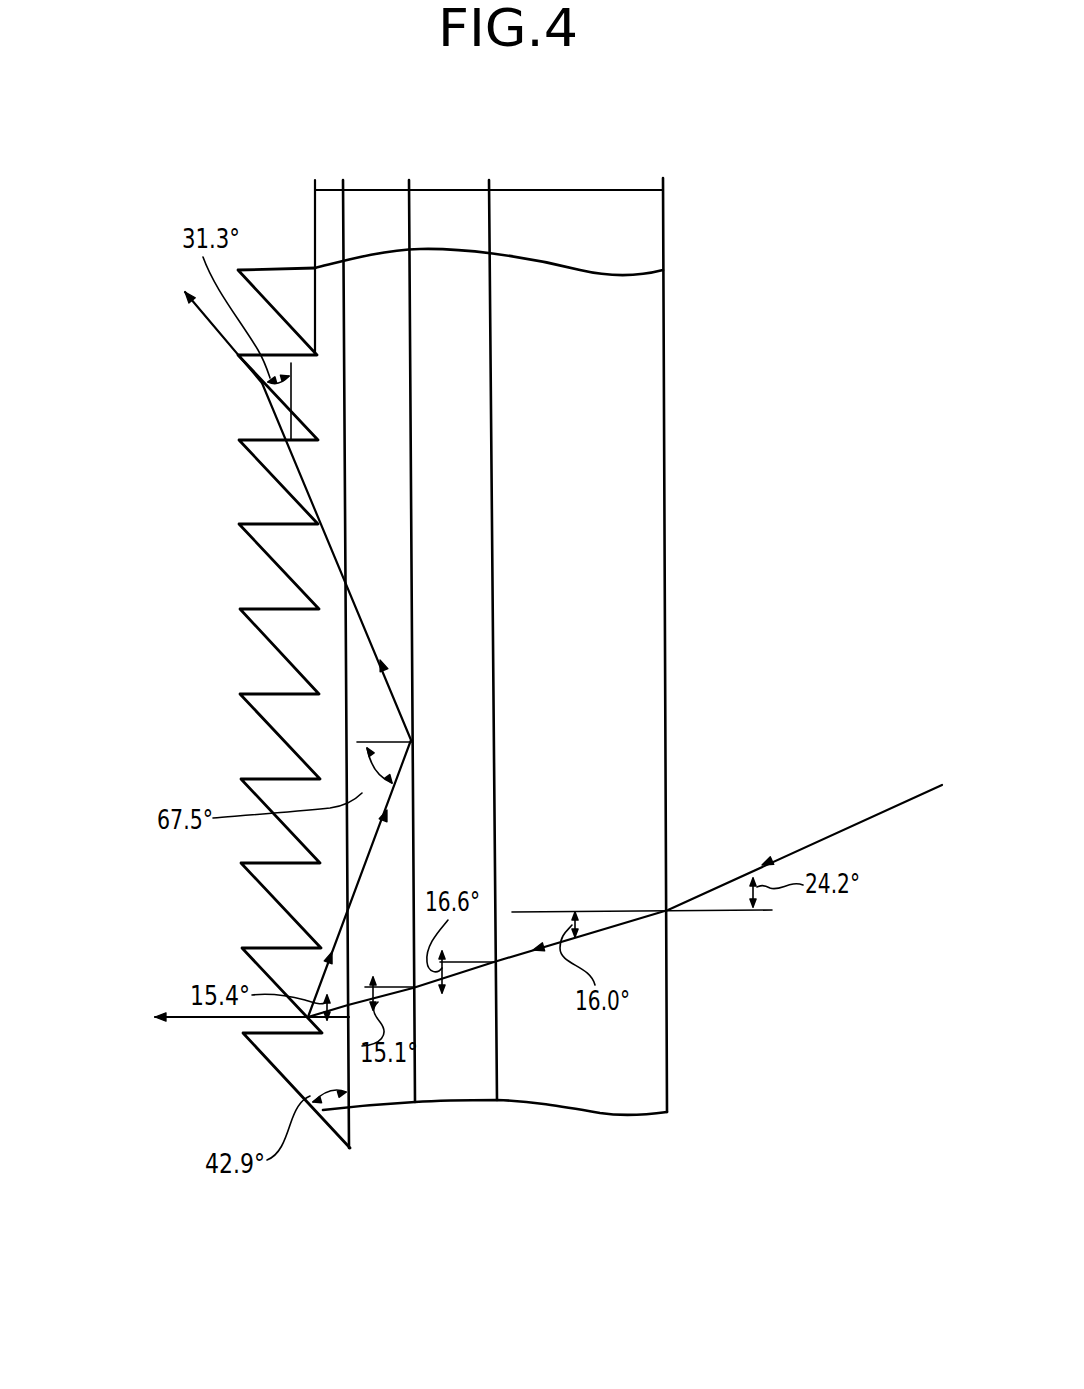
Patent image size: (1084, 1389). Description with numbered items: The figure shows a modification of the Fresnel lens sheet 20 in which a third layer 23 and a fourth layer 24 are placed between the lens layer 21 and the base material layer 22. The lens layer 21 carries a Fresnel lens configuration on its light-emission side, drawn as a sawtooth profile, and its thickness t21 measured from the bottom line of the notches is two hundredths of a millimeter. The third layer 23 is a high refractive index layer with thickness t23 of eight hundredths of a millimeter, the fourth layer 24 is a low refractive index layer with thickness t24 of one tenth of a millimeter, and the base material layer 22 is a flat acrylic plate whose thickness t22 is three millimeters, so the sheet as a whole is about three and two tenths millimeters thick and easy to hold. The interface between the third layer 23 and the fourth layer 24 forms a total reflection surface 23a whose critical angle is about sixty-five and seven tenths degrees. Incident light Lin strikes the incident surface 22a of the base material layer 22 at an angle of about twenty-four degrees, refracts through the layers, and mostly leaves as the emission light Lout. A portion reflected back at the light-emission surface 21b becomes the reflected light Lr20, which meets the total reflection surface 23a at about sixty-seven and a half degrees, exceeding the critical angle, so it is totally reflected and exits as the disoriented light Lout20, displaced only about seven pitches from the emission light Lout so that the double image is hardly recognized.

The Fresnel lens sheet 20 is at (427, 1248).
The lens layer 21 is at (280, 1053).
The light-emission surface 21b is at (250, 968).
The base material layer 22 is at (602, 1090).
The incident surface of base material layer 22a is at (670, 687).
The third layer 23 is at (373, 1098).
The total reflection surface 23a is at (410, 588).
The fourth layer 24 is at (463, 1088).
The thickness of lens layer t21 is at (328, 185).
The plate thickness of base material layer t22 is at (570, 185).
The thickness of third layer t23 is at (377, 185).
The thickness of fourth layer t24 is at (448, 185).
The incident light Lin is at (851, 829).
The reflected light Lr20 is at (368, 860).
The emission light Lout is at (207, 1020).
The disoriented light Lout20 is at (216, 335).